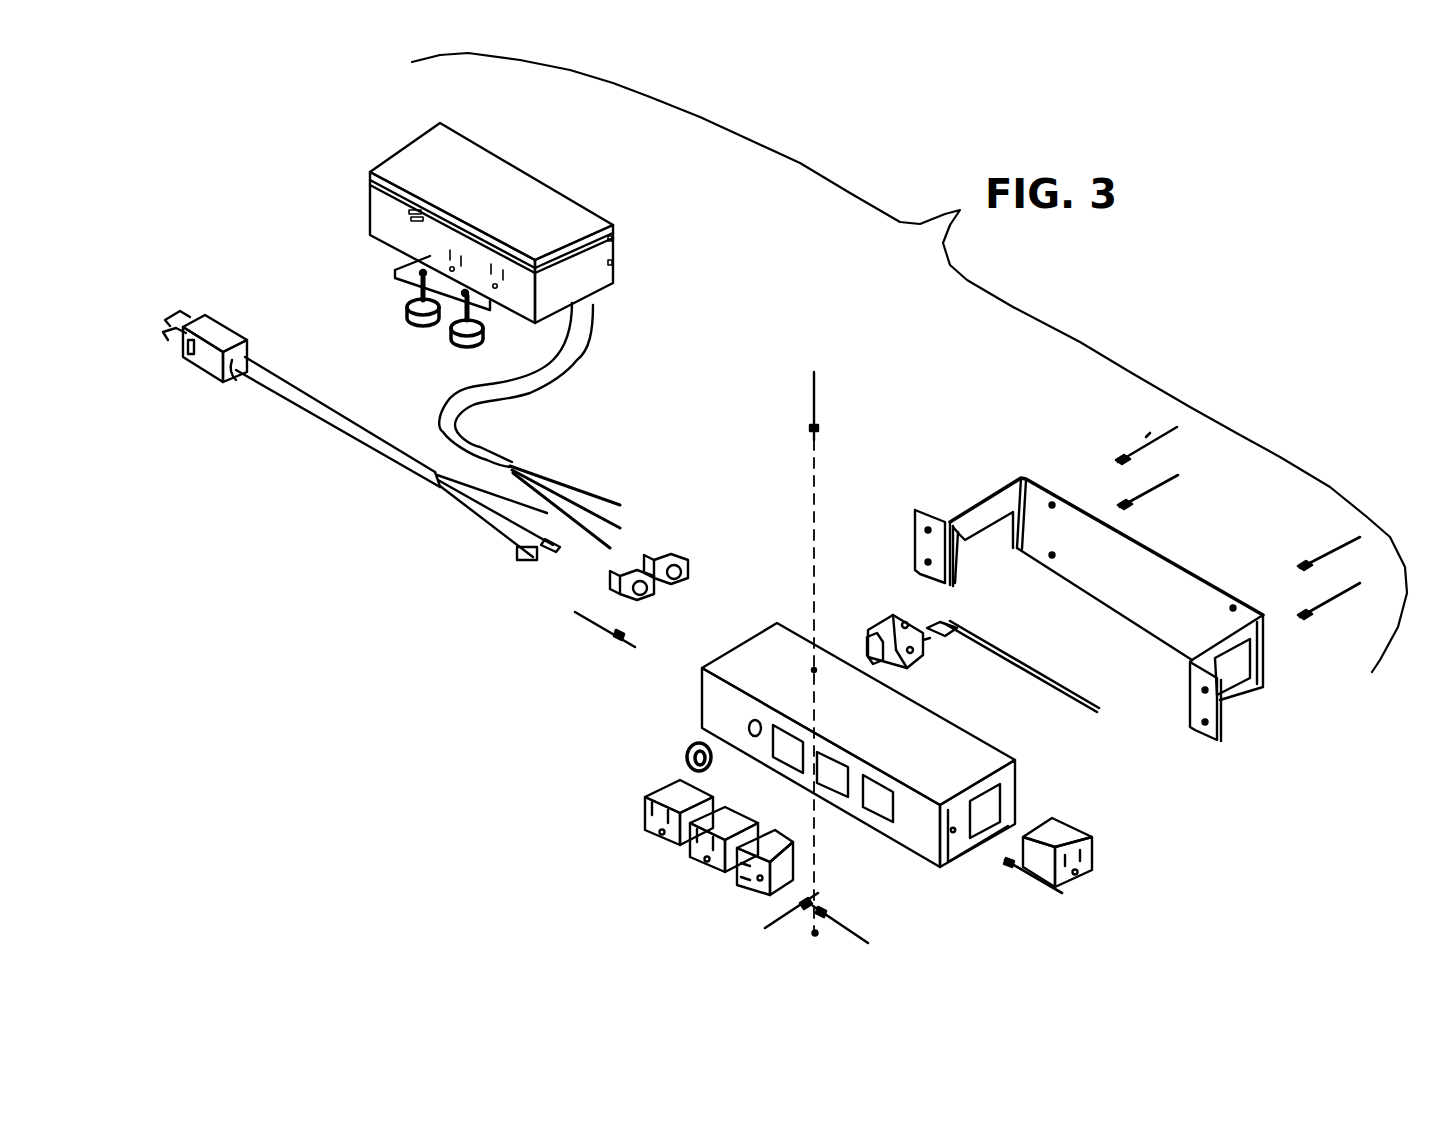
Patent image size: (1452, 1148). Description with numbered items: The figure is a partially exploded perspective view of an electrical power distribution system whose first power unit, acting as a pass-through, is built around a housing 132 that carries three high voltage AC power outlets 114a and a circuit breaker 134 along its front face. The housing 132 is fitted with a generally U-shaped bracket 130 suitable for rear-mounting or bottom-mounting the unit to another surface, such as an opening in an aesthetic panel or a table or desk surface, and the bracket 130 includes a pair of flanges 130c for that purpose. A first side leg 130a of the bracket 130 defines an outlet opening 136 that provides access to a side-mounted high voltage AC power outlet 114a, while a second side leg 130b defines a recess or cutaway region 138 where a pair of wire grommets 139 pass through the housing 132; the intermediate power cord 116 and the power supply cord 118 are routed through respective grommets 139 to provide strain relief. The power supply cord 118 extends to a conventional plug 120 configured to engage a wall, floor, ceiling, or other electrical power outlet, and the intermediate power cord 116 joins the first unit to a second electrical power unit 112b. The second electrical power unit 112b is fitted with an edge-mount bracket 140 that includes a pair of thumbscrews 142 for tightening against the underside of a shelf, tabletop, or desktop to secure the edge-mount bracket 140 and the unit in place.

The second electrical power unit 112b is at (626, 240).
The high voltage AC power outlet 114a is at (715, 890).
The intermediate power cord 116 is at (583, 353).
The power supply cord 118 is at (327, 425).
The plug 120 is at (244, 313).
The U-shaped bracket 130 is at (1187, 573).
The first side leg 130a is at (1243, 700).
The second side leg 130b is at (973, 488).
The flange 130c is at (915, 538).
The housing 132 is at (700, 698).
The circuit breaker 134 is at (866, 632).
The outlet opening 136 is at (1225, 668).
The recess or cutaway region 138 is at (993, 570).
The wire grommet 139 is at (680, 548).
The edge-mount bracket 140 is at (378, 272).
The thumbscrew 142 is at (463, 350).